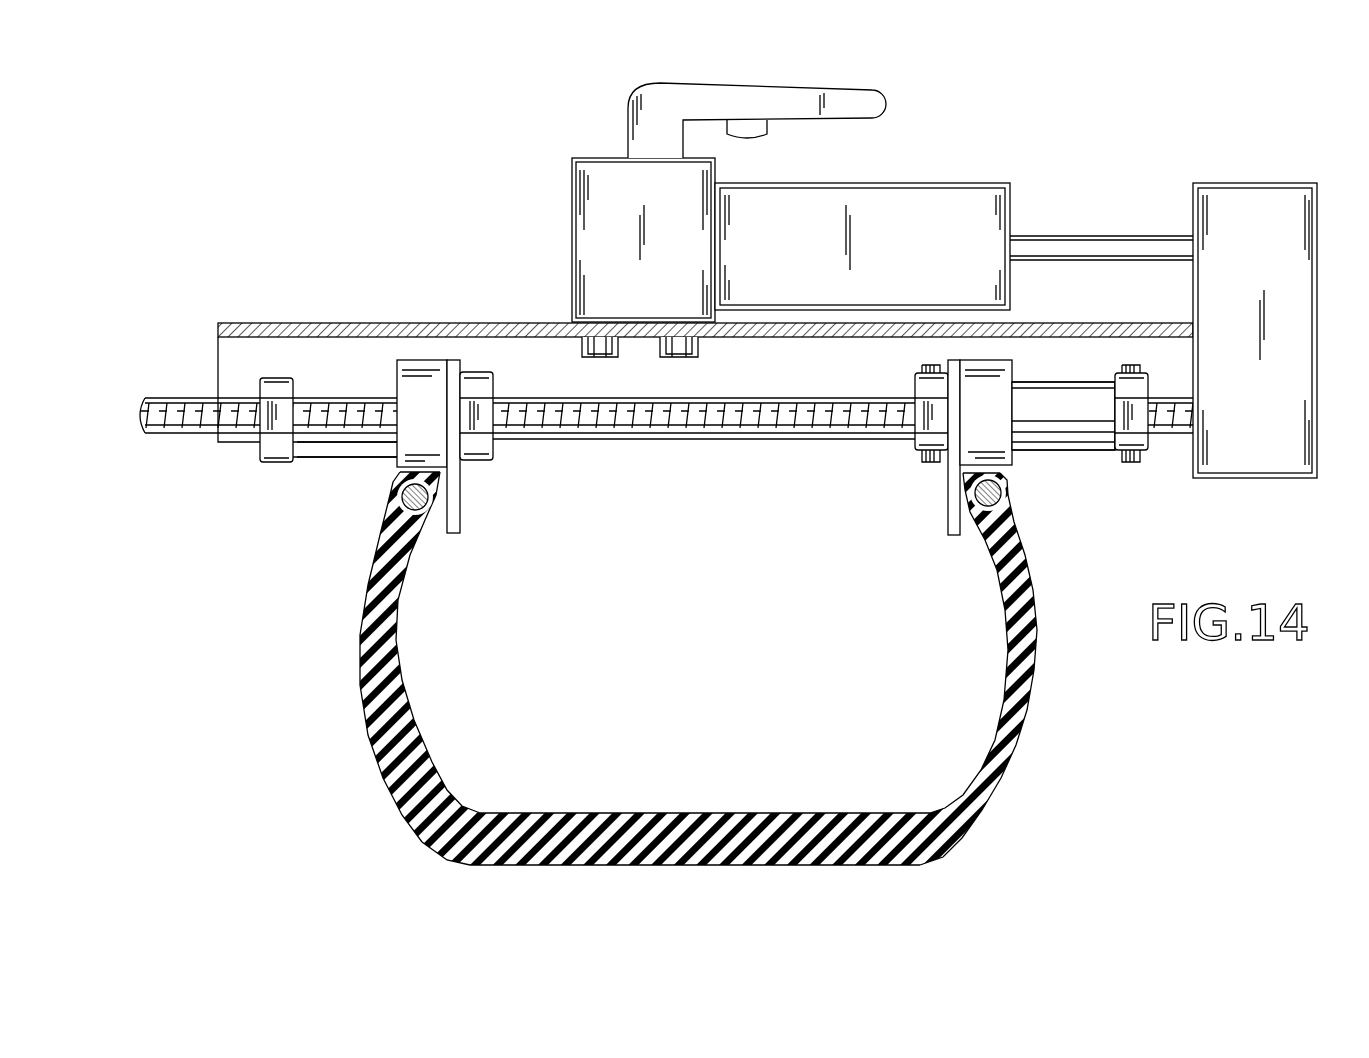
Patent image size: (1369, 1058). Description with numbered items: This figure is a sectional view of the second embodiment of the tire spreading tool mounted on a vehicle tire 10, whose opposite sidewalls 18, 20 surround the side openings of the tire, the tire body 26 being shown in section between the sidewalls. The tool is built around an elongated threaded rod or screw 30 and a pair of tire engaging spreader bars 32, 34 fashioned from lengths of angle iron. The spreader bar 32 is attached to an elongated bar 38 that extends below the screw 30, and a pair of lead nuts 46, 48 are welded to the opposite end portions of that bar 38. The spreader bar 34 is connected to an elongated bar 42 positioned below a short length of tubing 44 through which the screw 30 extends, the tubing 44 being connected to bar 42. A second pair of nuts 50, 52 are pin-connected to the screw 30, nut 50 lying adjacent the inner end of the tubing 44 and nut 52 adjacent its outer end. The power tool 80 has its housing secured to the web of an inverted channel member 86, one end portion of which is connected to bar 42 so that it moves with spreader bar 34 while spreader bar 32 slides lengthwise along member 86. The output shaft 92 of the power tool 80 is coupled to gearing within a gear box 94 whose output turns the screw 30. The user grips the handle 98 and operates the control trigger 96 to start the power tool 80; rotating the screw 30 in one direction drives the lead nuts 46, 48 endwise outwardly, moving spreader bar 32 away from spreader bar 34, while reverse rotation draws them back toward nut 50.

The vehicle tire 10 is at (696, 675).
The sidewall 18 is at (365, 580).
The sidewall 20 is at (1038, 650).
The base portion of band 26 is at (720, 813).
The threaded rod or screw 30 is at (712, 418).
The spreader bar 32 is at (460, 505).
The spreader bar 34 is at (950, 490).
The elongated bar 38 is at (375, 456).
The elongated bar 42 is at (1040, 455).
The tubing 44 is at (1080, 424).
The lead nut 46 is at (278, 440).
The lead nut 48 is at (480, 445).
The nut 50 is at (933, 425).
The nut 52 is at (1138, 425).
The power tool 80 is at (772, 255).
The inverted channel member 86 is at (480, 323).
The output shaft 92 is at (1097, 236).
The gear box 94 is at (1245, 275).
The control trigger 96 is at (755, 130).
The handle 98 is at (803, 88).